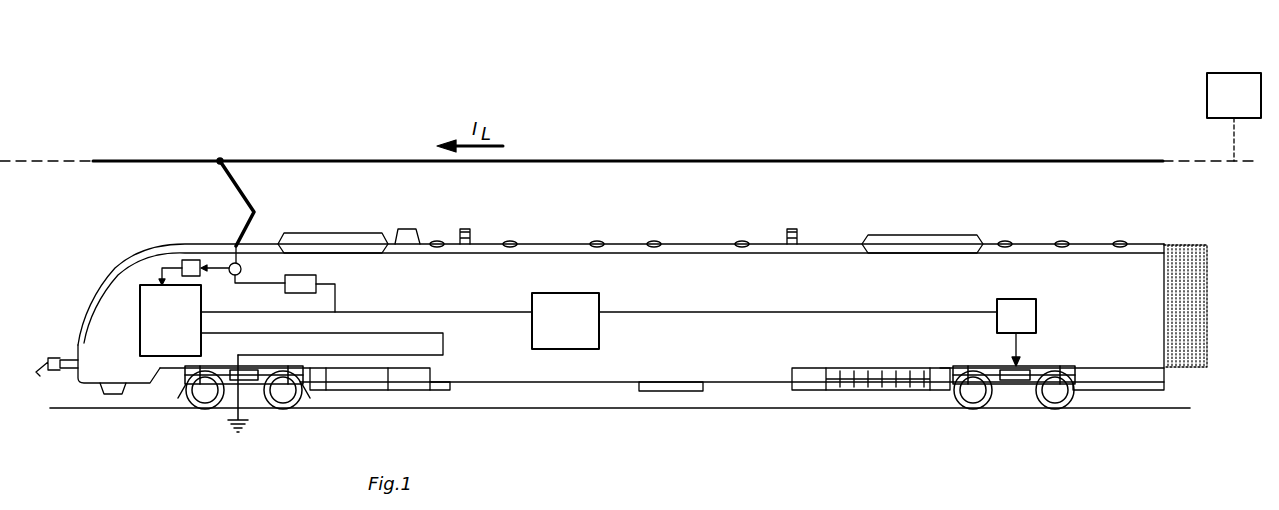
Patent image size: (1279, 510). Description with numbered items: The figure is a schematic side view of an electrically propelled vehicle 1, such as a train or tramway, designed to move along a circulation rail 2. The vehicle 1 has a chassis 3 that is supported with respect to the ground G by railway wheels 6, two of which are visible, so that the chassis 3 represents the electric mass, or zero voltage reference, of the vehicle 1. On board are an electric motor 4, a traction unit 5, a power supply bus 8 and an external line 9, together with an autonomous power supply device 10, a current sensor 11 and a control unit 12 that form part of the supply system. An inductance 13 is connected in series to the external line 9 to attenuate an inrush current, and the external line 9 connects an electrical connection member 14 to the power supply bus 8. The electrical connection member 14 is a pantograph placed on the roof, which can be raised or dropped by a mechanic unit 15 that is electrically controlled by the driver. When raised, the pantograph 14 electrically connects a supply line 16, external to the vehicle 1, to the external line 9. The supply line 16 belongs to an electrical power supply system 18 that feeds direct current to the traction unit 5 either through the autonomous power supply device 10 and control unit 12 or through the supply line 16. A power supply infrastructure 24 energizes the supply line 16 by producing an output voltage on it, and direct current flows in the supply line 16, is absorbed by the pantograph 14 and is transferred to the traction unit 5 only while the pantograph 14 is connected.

The electrically propelled vehicle 1 is at (621, 311).
The circulation rail 2 is at (520, 409).
The chassis 3 is at (760, 362).
The electric motor 4 is at (1016, 332).
The traction unit 5 is at (764, 321).
The railway wheels 6 is at (1056, 406).
The power supply bus 8 is at (410, 312).
The external line 9 is at (338, 298).
The autonomous power supply device 10 is at (291, 320).
The current sensor 11 is at (242, 269).
The control unit 12 is at (191, 259).
The inductance 13 is at (292, 287).
The electrical connection member 14 is at (246, 186).
The mechanic unit 15 is at (362, 242).
The supply line 16 is at (305, 160).
The electrical power supply system 18 is at (133, 133).
The power supply infrastructure 24 is at (1234, 117).
The ground G is at (226, 430).